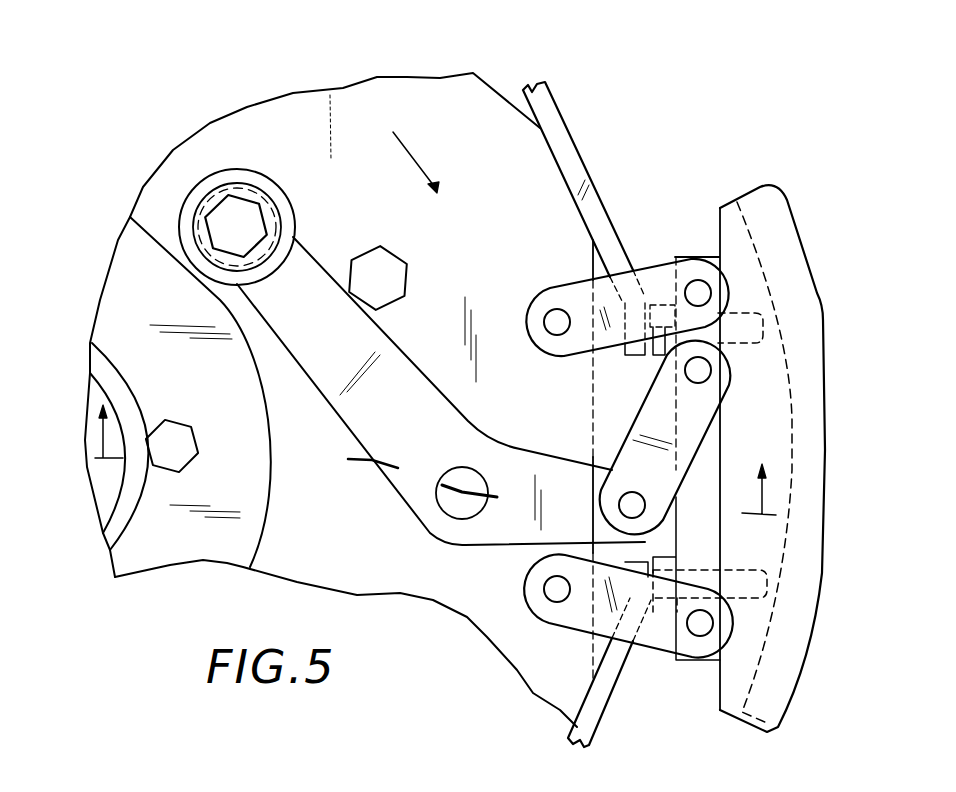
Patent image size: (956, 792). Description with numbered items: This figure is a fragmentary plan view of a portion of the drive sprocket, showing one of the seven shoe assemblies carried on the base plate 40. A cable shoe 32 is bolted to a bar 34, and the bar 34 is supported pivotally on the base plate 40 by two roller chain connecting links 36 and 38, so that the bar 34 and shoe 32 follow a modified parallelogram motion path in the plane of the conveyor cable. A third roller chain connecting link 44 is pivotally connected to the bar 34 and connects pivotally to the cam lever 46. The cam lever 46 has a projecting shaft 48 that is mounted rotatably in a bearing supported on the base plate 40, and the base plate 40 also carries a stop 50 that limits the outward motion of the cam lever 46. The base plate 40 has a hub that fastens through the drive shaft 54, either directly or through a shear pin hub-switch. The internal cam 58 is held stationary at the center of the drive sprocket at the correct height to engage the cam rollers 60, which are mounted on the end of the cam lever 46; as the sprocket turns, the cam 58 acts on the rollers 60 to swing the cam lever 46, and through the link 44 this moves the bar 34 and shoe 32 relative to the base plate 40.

The cable shoe 32 is at (790, 240).
The bar 34 is at (708, 468).
The roller chain connecting link 36 is at (655, 273).
The roller chain connecting link 38 is at (570, 617).
The base plate 40 is at (432, 50).
The third roller chain connecting link 44 is at (662, 397).
The cam lever 46 is at (413, 384).
The projecting shaft 48 is at (445, 498).
The stop 50 is at (388, 263).
The drive shaft 54 is at (107, 493).
The internal cam 58 is at (253, 507).
The cam roller 60 is at (290, 203).